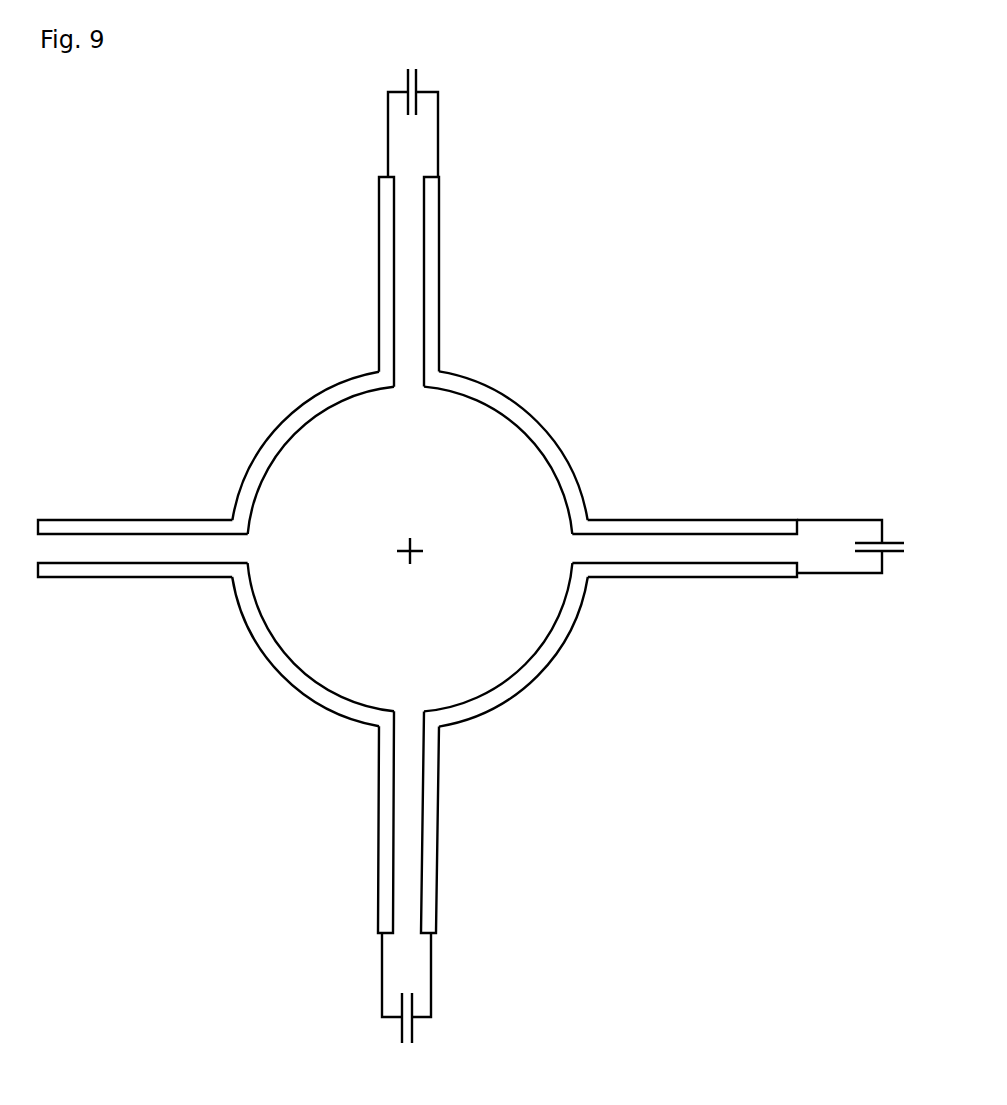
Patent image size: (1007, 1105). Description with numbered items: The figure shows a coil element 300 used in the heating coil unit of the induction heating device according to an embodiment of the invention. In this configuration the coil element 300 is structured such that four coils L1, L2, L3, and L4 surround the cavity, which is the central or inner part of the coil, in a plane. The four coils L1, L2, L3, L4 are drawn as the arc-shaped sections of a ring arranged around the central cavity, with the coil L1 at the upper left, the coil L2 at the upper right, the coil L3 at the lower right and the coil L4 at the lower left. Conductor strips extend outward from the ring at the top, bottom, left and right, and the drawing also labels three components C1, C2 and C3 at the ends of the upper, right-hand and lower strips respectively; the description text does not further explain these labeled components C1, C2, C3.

The coil element 300 is at (218, 93).
The coil L1 is at (302, 427).
The coil L2 is at (519, 429).
The coil L3 is at (557, 653).
The coil L4 is at (263, 653).
The first capacitor C1 is at (416, 75).
The second capacitor C2 is at (890, 553).
The third capacitor C3 is at (418, 1033).